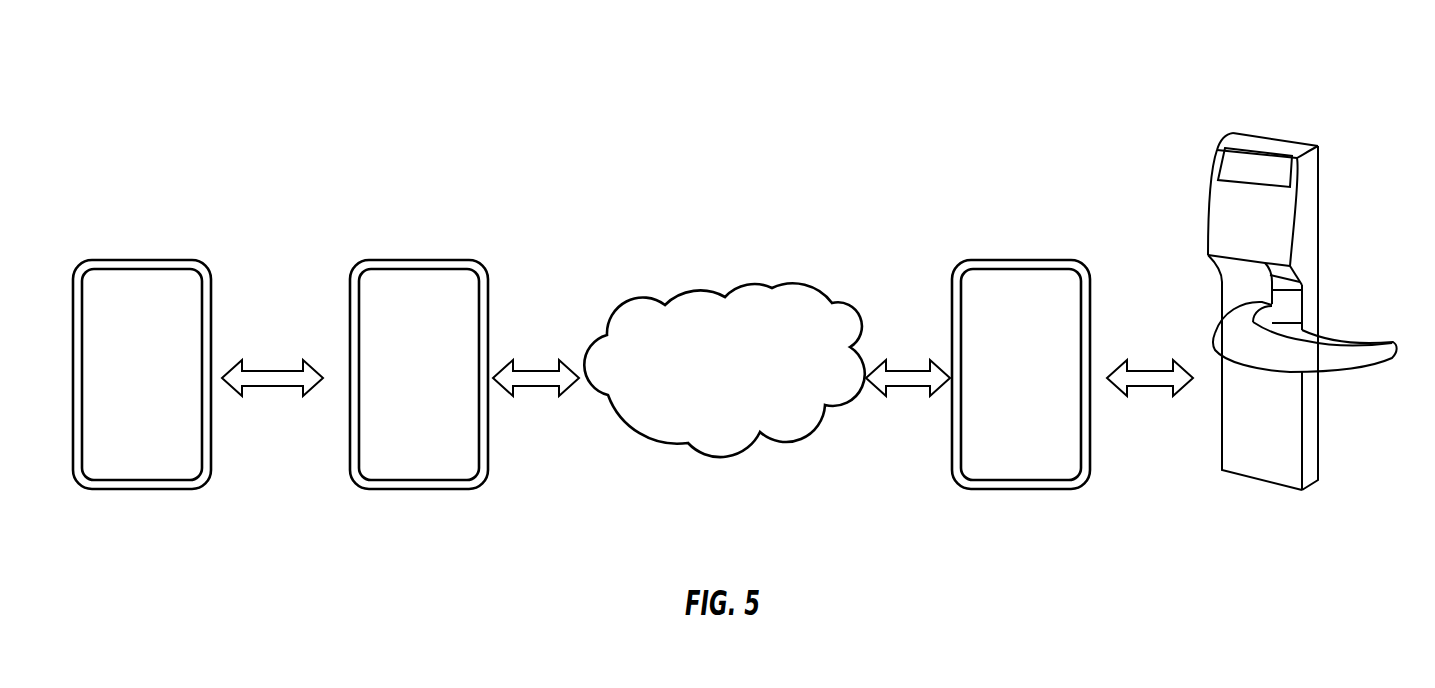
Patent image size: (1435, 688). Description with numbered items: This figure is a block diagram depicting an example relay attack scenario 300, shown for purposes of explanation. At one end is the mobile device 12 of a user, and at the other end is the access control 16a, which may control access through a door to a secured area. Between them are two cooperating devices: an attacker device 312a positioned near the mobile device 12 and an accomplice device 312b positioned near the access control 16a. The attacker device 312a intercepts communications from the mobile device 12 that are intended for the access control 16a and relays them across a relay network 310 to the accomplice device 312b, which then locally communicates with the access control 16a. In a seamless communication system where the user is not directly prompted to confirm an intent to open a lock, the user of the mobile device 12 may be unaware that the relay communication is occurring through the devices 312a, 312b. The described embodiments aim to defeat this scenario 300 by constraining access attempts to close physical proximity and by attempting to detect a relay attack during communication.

The relay attack scenario 300 is at (637, 118).
The mobile device 12 is at (150, 388).
The attacker device 312a is at (440, 388).
The relay network 310 is at (715, 456).
The accomplice device 312b is at (1048, 388).
The access control 16a is at (1278, 135).